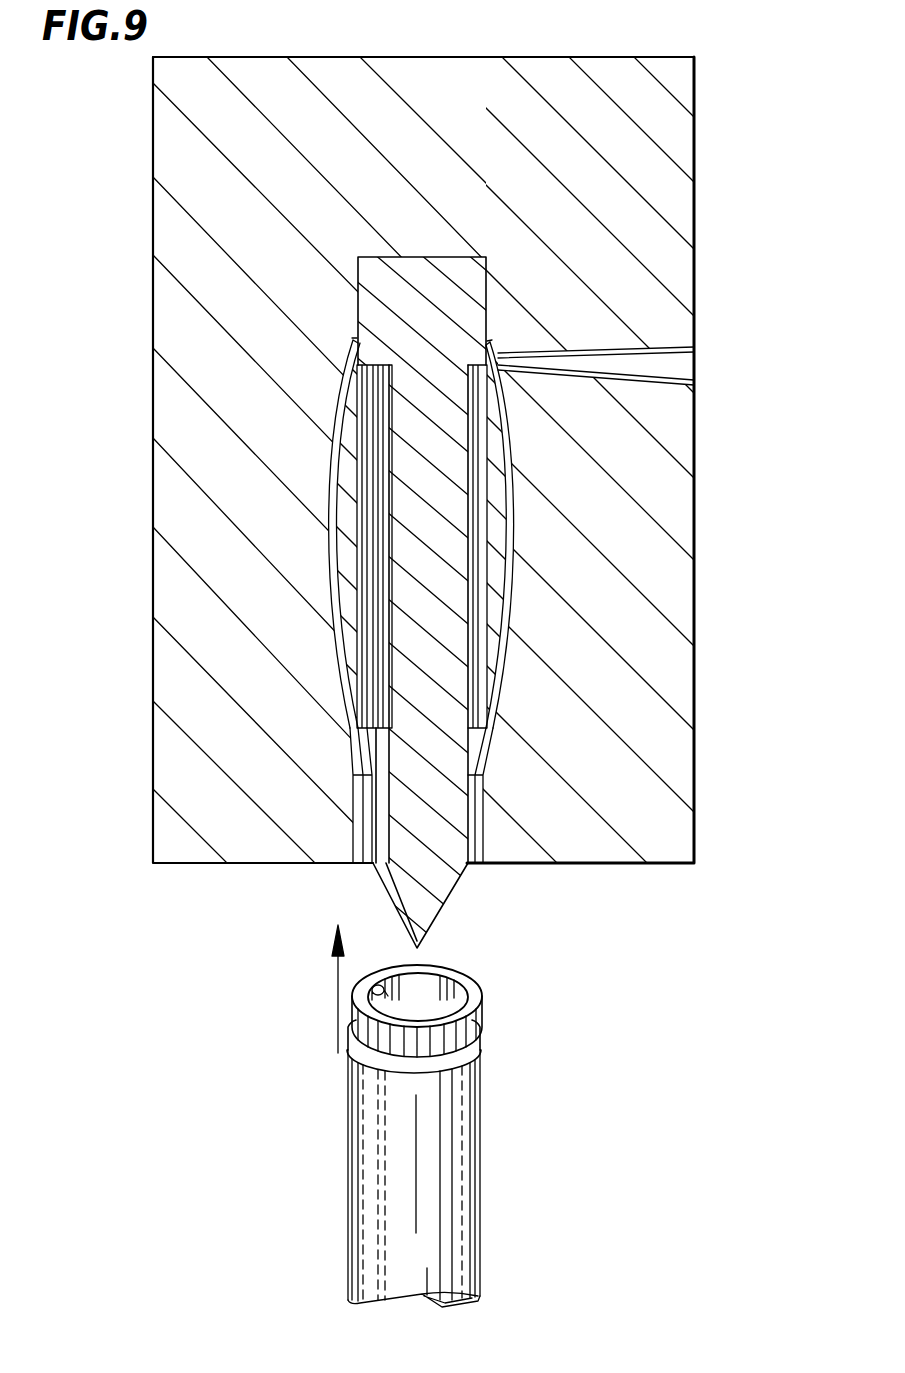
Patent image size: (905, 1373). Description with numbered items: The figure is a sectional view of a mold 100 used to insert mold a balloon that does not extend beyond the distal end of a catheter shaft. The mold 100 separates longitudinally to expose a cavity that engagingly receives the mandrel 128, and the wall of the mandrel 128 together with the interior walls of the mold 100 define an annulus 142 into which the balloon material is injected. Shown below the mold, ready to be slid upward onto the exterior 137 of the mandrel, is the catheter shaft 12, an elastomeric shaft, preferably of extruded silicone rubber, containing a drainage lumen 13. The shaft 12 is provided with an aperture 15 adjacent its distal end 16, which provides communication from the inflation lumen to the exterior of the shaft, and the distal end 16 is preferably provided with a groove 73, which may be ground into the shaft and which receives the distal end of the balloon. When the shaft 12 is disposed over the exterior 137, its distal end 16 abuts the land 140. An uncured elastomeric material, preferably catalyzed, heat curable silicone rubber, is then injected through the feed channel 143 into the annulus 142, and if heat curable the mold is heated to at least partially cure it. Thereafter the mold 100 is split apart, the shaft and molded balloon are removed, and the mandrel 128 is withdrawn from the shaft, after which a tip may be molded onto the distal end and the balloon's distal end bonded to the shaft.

The mold 100 is at (696, 265).
The mandrel 128 is at (413, 297).
The exterior 137 is at (453, 601).
The land 140 is at (372, 377).
The annulus 142 is at (508, 425).
The feed channel 143 is at (598, 354).
The distal end 16 is at (484, 995).
The drainage lumen 13 is at (428, 1013).
The groove 73 is at (486, 1041).
The catheter shaft 12 is at (483, 1180).
The aperture 15 is at (350, 1243).